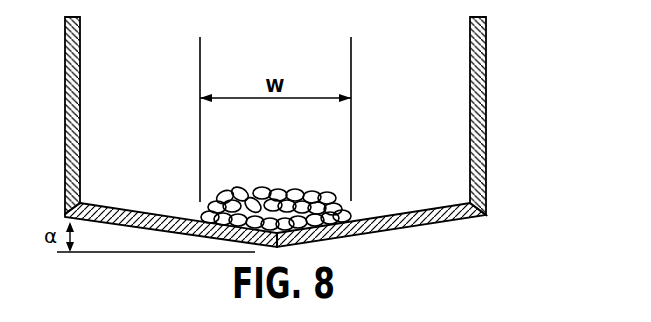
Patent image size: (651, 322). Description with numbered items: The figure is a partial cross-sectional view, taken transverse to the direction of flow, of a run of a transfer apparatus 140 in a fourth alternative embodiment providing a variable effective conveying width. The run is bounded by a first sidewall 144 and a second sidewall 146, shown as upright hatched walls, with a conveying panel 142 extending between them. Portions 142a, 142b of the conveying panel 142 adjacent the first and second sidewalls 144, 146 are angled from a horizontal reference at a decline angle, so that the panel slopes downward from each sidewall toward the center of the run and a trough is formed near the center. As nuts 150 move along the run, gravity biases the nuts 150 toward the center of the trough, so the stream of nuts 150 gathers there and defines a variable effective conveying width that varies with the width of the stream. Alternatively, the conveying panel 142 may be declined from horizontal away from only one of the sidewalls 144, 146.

The transfer apparatus 140 is at (275, 123).
The conveying panel 142 is at (275, 182).
The first portion of conveying panel 142a is at (137, 211).
The second portion of conveying panel 142b is at (447, 202).
The first sidewall 144 is at (80, 62).
The second sidewall 146 is at (470, 67).
The nuts 150 is at (281, 168).